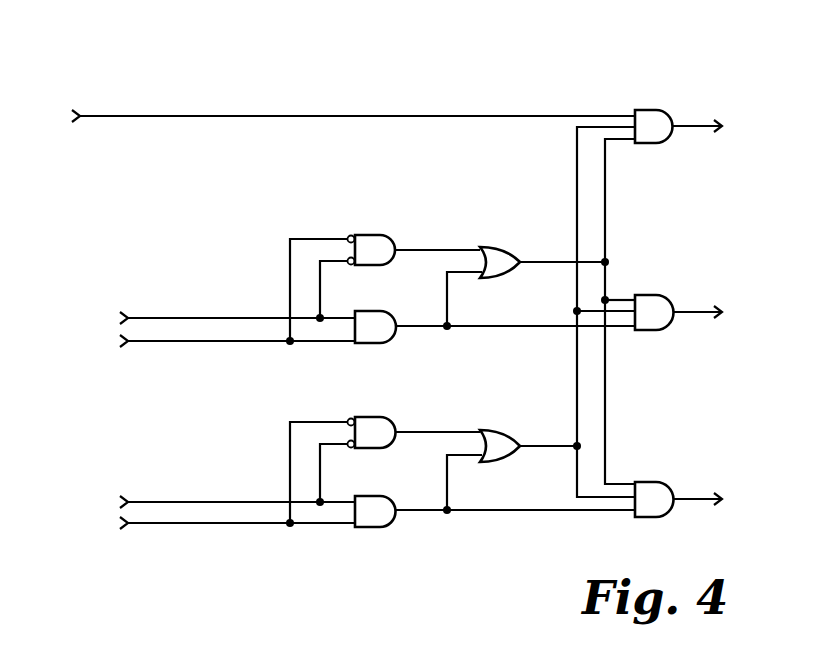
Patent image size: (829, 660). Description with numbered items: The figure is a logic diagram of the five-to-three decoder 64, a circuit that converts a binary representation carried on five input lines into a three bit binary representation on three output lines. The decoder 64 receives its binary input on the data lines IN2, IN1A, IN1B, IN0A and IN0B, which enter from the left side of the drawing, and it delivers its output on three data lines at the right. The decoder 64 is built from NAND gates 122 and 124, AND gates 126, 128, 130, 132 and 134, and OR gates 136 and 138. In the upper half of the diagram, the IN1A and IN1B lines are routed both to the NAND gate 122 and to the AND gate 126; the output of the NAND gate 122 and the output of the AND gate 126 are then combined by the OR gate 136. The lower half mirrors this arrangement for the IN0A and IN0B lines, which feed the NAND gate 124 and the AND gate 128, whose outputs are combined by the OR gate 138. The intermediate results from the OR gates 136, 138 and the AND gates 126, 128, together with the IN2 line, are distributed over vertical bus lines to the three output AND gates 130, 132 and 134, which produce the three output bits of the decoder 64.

The five-to-three decoder 64 is at (285, 74).
The NAND gate 122 is at (370, 240).
The NAND gate 124 is at (372, 425).
The AND gate 126 is at (380, 327).
The AND gate 128 is at (382, 516).
The AND gate 130 is at (654, 112).
The AND gate 132 is at (648, 302).
The AND gate 134 is at (648, 488).
The OR gate 136 is at (490, 252).
The OR gate 138 is at (490, 434).